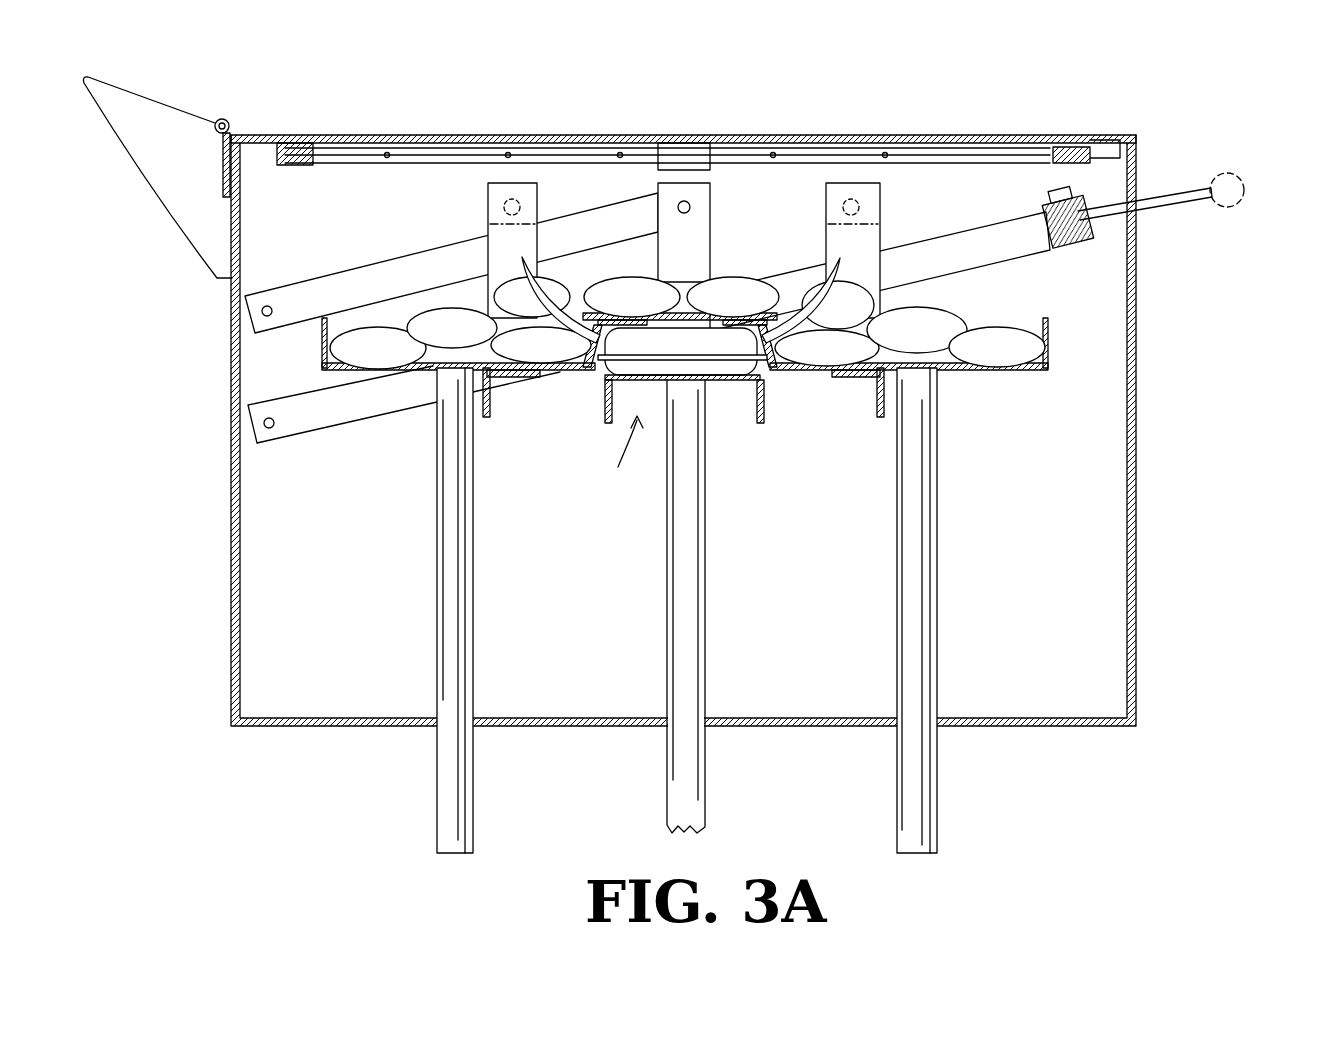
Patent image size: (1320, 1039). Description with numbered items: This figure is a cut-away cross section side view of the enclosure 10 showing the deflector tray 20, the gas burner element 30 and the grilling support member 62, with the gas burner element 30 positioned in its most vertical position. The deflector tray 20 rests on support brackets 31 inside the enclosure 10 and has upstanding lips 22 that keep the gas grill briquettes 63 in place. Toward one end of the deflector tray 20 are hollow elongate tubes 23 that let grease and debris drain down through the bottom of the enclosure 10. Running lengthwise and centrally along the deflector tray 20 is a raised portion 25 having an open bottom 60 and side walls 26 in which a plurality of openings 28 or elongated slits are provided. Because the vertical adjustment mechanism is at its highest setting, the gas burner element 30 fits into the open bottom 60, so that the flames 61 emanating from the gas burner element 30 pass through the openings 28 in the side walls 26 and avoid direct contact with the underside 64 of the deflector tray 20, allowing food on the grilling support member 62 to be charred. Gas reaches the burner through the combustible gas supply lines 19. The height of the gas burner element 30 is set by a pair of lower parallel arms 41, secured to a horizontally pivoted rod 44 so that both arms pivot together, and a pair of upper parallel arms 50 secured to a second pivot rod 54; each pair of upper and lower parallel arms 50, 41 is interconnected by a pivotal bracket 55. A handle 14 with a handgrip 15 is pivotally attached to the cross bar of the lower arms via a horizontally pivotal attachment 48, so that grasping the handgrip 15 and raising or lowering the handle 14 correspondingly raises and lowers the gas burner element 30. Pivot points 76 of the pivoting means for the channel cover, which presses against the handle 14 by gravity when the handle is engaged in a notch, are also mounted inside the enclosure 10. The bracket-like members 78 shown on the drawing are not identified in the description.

The enclosure 10 is at (231, 603).
The handle 14 is at (1165, 197).
The handgrip 15 is at (1246, 192).
The combustible gas supply lines 19 is at (690, 675).
The deflector tray 20 is at (1010, 377).
The upstanding lips 22 is at (318, 340).
The elongate tubes 23 is at (445, 640).
The raised portion 25 is at (640, 298).
The side walls 26 is at (772, 372).
The openings 28 is at (800, 348).
The gas burner element 30 is at (611, 451).
The support brackets 31 is at (488, 232).
The lower parallel arms 41 is at (345, 412).
The rod 44 is at (268, 430).
The horizontally pivotal attachment 48 is at (1096, 248).
The upper parallel arms 50 is at (396, 266).
The second pivot rod 54 is at (266, 306).
The pivotal bracket 55 is at (700, 232).
The open bottom 60 is at (590, 380).
The flames 61 is at (838, 262).
The grilling support member 62 is at (1022, 147).
The gas grill briquettes 63 is at (992, 345).
The underside 64 is at (955, 378).
The pivot points 76 is at (487, 422).
The rail bracket 78 is at (312, 166).